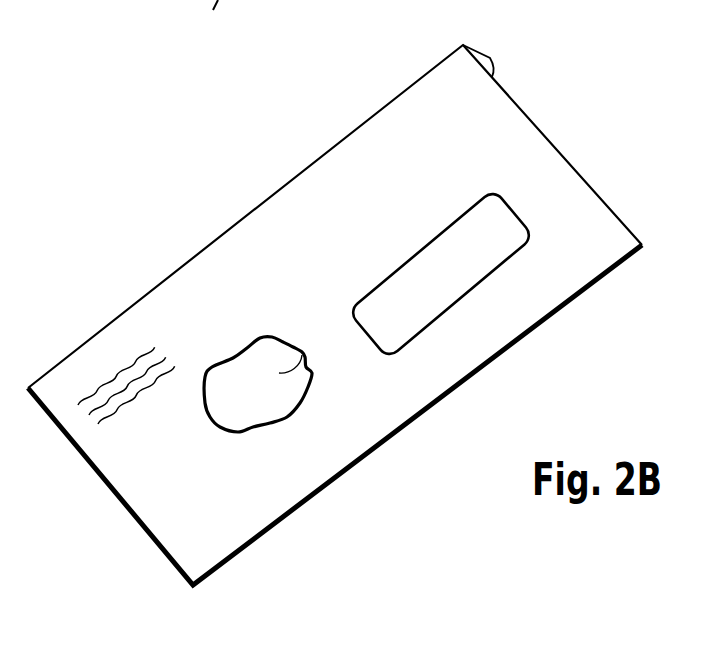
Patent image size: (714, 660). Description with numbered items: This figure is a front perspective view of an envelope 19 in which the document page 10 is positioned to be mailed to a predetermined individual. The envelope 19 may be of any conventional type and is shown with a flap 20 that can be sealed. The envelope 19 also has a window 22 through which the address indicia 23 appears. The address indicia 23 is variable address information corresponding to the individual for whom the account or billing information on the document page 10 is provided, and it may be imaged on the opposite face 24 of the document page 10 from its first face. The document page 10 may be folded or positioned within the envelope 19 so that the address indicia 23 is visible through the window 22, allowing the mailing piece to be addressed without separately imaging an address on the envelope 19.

The envelope 19 is at (566, 87).
The flap 20 is at (488, 58).
The window 22 is at (398, 271).
The address indicia 23 is at (464, 283).
The document page 10 is at (236, 411).
The opposite face 24 is at (302, 353).